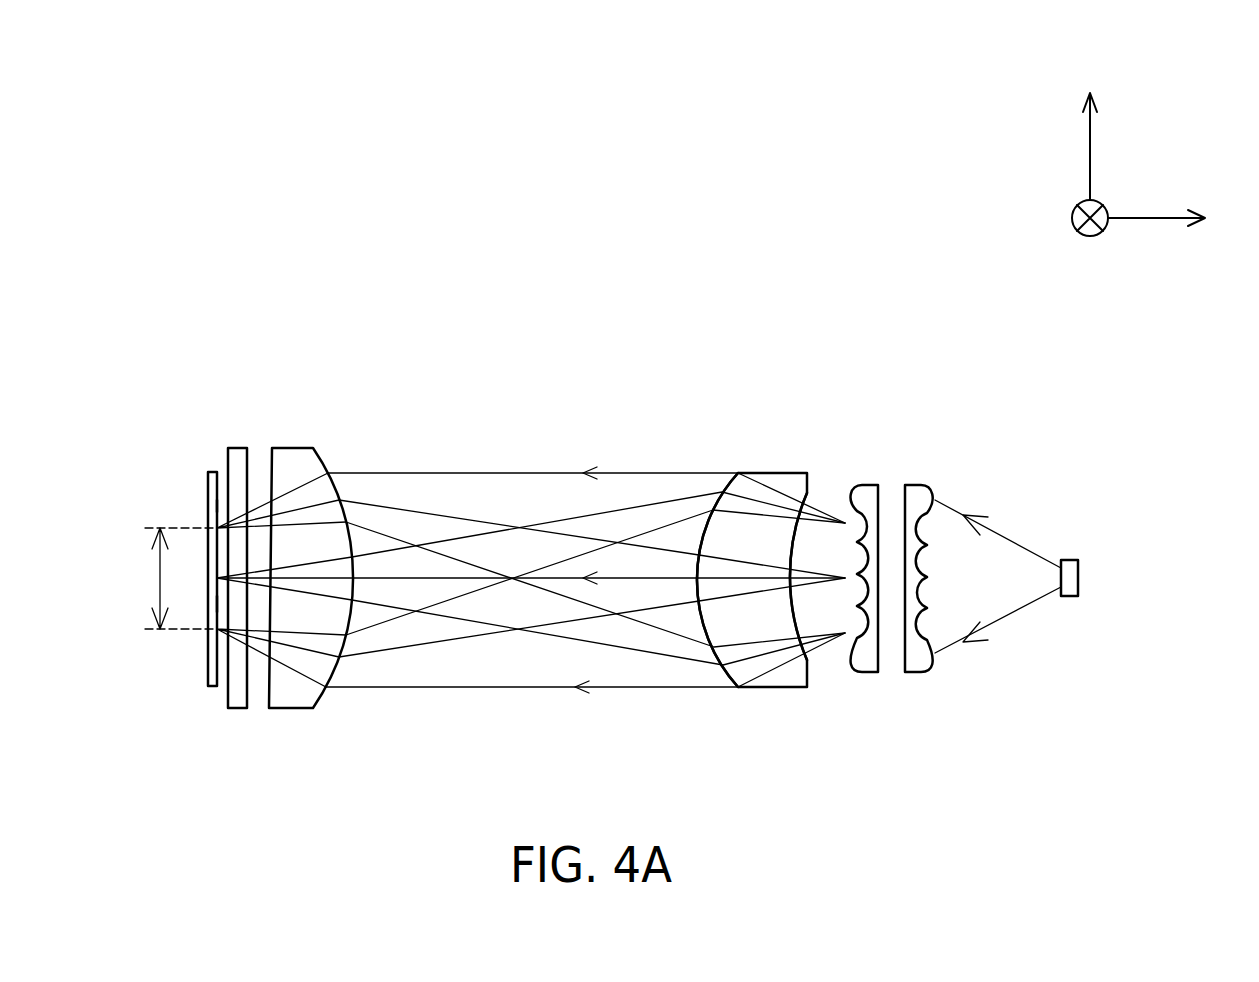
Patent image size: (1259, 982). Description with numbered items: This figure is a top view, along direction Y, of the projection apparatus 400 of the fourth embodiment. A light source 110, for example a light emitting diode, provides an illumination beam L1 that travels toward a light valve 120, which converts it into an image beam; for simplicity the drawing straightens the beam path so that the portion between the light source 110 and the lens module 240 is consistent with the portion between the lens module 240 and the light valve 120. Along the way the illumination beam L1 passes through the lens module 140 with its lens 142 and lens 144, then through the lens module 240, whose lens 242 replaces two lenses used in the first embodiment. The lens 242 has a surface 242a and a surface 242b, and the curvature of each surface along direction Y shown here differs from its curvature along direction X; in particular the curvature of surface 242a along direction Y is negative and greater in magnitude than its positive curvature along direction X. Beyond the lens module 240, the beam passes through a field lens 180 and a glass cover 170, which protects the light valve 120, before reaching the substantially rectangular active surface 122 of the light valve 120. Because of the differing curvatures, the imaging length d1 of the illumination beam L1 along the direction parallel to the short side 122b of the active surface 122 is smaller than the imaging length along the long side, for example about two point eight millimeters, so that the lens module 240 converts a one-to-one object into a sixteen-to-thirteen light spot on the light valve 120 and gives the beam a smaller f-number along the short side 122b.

The projection apparatus 400 is at (1158, 806).
The light source 110 is at (1069, 560).
The illumination beam L1 is at (537, 471).
The lens module 140 is at (952, 379).
The first lens array 142 is at (918, 500).
The lens 144 is at (866, 502).
The lens module 240 is at (763, 545).
The lens 242 is at (787, 484).
The surface 242a is at (805, 612).
The surface 242b is at (700, 620).
The field lens 180 is at (293, 466).
The glass cover 170 is at (236, 468).
The light valve 120 is at (212, 470).
The active surface 122 is at (230, 598).
The short side 122b is at (230, 512).
The imaging length d1 is at (166, 578).